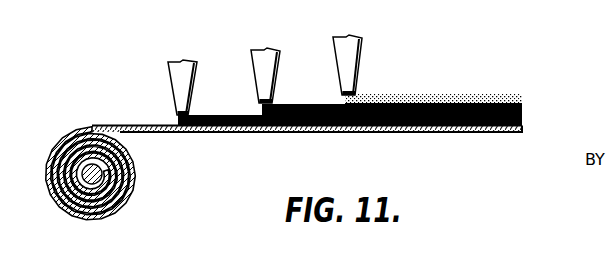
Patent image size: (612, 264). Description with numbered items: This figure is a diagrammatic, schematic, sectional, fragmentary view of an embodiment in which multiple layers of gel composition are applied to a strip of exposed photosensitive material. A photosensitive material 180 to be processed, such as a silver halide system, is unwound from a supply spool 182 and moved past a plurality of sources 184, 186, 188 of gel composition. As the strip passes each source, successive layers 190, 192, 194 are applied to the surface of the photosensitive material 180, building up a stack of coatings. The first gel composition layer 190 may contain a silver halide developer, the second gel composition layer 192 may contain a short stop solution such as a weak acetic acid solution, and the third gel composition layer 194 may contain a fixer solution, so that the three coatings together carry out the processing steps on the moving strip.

The photosensitive material 180 is at (157, 134).
The supply spool 182 is at (127, 201).
The source of gel composition 184 is at (175, 82).
The source of gel composition 186 is at (263, 63).
The source of gel composition 188 is at (342, 58).
The gel composition layer 190 is at (522, 125).
The gel composition layer 192 is at (522, 110).
The gel composition layer 194 is at (520, 99).